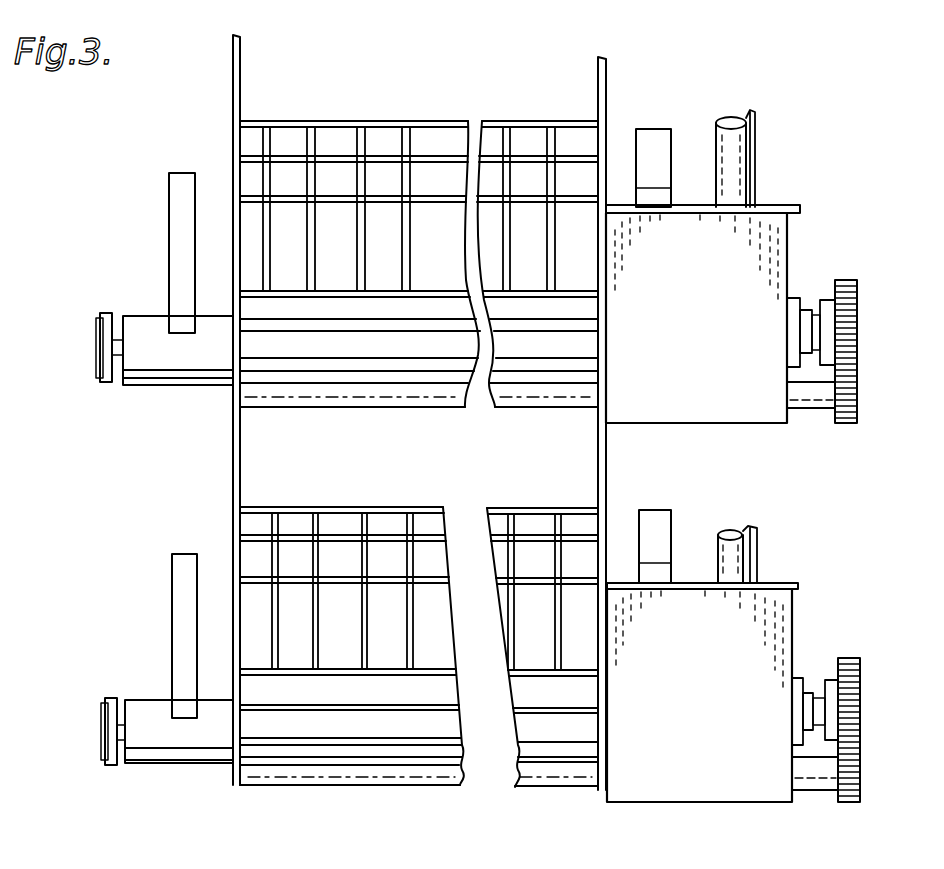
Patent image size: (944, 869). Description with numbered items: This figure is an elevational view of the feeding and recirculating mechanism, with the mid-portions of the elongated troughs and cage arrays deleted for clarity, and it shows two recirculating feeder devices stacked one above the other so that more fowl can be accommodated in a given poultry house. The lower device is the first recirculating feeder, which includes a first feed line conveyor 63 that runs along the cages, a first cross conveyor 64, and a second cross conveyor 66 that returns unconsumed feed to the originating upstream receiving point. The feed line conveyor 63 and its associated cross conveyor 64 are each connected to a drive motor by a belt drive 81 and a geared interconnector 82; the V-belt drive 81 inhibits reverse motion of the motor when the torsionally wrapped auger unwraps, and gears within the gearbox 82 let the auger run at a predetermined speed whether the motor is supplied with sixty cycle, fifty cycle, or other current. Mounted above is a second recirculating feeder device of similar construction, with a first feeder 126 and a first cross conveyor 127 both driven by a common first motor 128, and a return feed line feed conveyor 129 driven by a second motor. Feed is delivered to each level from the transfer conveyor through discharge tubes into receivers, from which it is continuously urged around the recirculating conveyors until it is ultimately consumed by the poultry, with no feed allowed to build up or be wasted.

The first feed line conveyor 63 is at (411, 807).
The first cross conveyor 64 is at (180, 554).
The second cross conveyor 66 is at (672, 535).
The belt drive 81 is at (100, 736).
The geared interconnector 82 is at (166, 758).
The first feeder 126 is at (540, 398).
The first cross conveyor 127 is at (178, 210).
The first motor 128 is at (136, 315).
The return feed line feed conveyor 129 is at (673, 147).